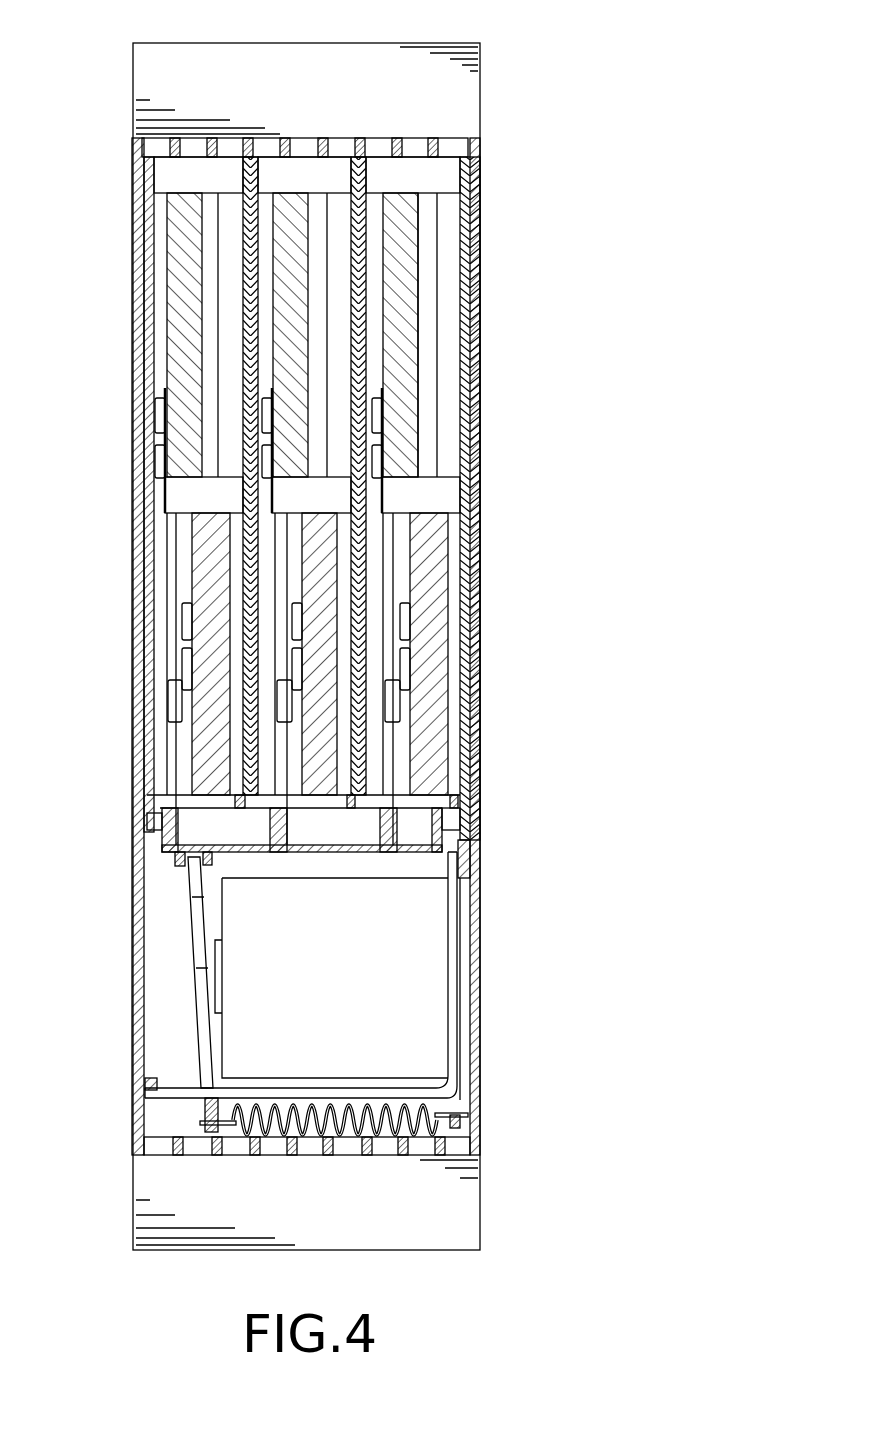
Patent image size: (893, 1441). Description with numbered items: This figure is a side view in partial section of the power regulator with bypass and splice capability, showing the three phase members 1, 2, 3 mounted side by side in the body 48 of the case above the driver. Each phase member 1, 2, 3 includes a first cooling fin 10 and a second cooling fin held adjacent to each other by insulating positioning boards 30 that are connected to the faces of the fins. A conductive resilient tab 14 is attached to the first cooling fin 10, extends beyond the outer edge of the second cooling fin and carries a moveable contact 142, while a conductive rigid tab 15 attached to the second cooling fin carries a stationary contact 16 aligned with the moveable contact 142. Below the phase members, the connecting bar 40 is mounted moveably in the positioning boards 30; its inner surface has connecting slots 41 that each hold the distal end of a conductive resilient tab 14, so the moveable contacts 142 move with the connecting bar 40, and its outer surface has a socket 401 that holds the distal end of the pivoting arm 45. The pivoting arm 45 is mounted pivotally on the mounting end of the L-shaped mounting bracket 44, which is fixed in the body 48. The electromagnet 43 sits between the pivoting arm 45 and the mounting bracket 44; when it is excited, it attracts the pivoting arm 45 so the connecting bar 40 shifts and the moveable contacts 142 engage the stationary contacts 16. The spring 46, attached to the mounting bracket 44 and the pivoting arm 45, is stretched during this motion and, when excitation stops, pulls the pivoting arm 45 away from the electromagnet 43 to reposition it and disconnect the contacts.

The phase member 1 is at (418, 180).
The phase member 2 is at (303, 180).
The phase member 3 is at (196, 180).
The first cooling fin 10 is at (450, 290).
The conductive resilient tab 14 is at (408, 758).
The conductive rigid tab 15 is at (412, 656).
The stationary contact 16 is at (413, 686).
The positioning board 30 is at (470, 548).
The connecting bar 40 is at (410, 850).
The connecting slot 41 is at (430, 818).
The electromagnet 43 is at (175, 1050).
The mounting bracket 44 is at (452, 985).
The pivoting arm 45 is at (197, 935).
The spring 46 is at (350, 1137).
The body 48 is at (472, 370).
The moveable contact 142 is at (396, 712).
The socket 401 is at (178, 861).